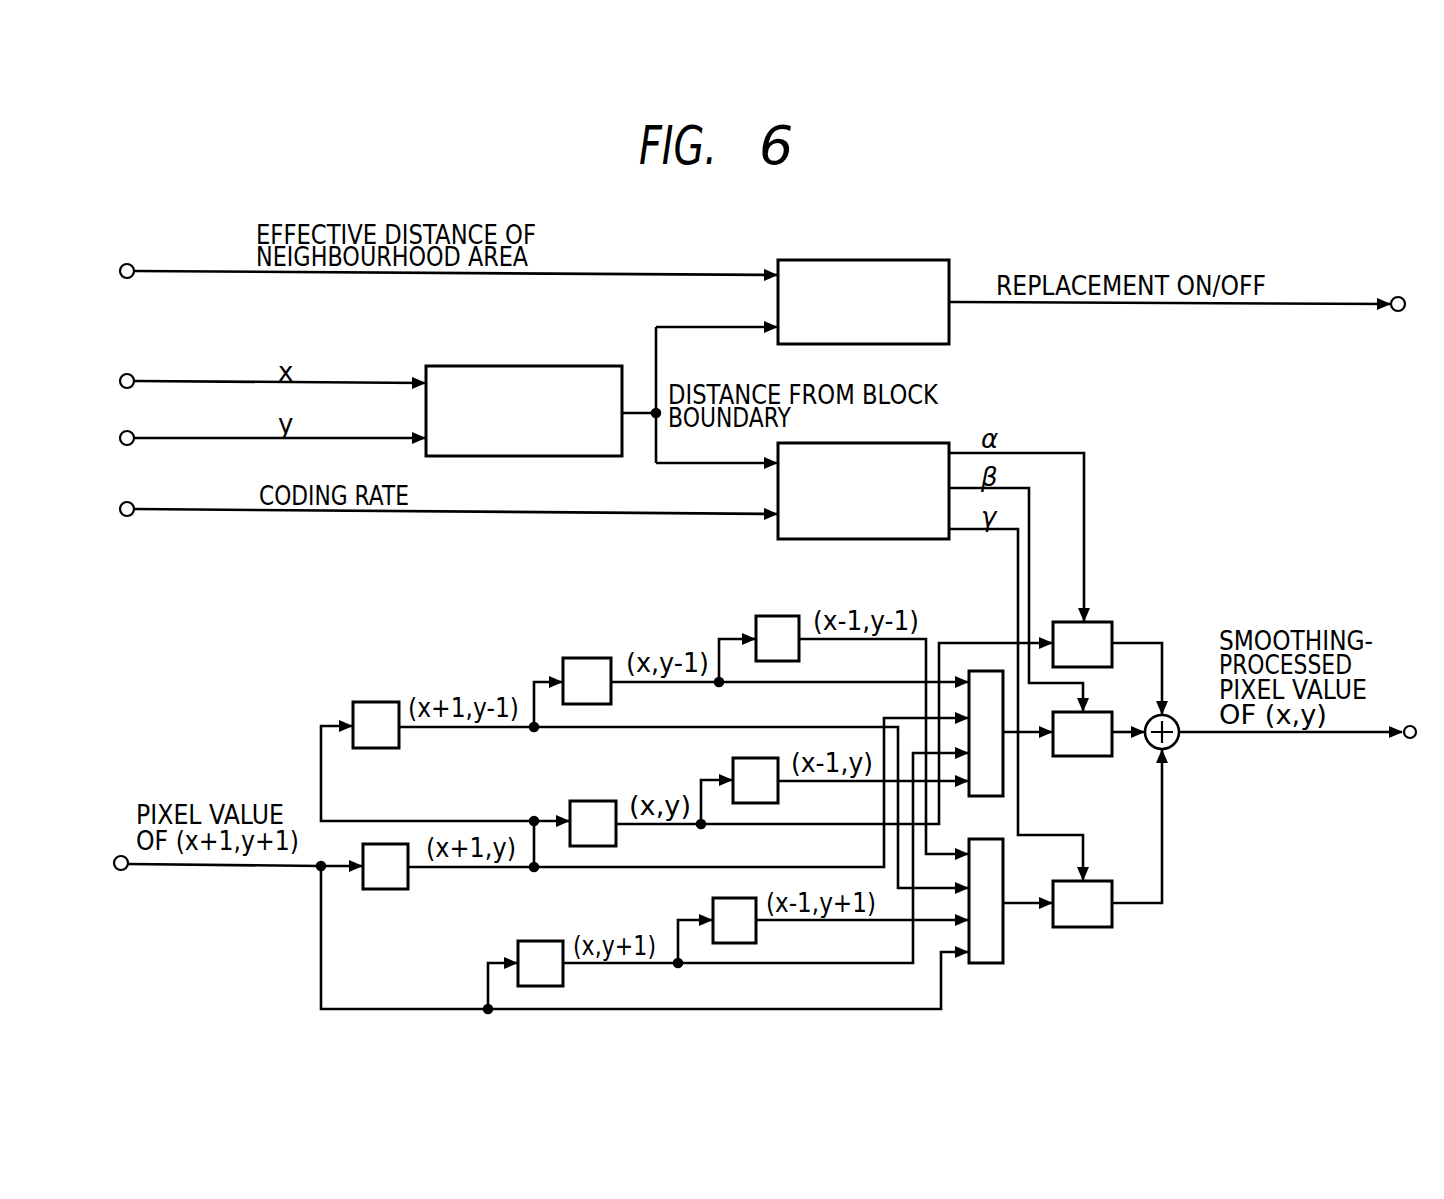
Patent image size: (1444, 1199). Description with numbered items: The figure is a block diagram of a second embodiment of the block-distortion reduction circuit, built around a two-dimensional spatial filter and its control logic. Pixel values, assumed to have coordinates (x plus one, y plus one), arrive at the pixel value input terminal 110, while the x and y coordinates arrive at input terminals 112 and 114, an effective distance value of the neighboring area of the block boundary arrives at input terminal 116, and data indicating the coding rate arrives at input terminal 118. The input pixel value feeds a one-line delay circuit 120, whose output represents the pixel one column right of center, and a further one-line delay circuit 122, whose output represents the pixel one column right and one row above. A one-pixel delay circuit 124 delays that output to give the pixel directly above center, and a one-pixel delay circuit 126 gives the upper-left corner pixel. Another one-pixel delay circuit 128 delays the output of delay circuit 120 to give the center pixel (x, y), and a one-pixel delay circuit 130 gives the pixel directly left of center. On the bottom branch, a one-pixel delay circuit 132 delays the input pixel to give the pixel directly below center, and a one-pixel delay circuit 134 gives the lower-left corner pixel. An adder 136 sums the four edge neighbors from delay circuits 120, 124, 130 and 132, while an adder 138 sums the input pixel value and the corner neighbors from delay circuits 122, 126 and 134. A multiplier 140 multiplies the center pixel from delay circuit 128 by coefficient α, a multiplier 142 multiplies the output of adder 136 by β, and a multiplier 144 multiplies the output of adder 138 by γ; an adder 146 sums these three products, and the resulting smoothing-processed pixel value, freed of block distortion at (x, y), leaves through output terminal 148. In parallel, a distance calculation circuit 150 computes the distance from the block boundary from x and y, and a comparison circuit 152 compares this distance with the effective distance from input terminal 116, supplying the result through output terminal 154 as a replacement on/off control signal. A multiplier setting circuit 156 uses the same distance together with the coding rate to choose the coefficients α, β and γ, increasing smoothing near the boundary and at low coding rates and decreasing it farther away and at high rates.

The pixel value input terminal 110 is at (124, 868).
The input terminal 112 is at (128, 373).
The input terminal 114 is at (128, 430).
The input terminal 116 is at (130, 264).
The input terminal 118 is at (128, 516).
The one-line delay circuit 120 is at (392, 888).
The one-line delay circuit 122 is at (363, 701).
The one-pixel delay circuit 124 is at (578, 657).
The one-pixel delay circuit 126 is at (765, 615).
The one-pixel delay circuit 128 is at (595, 800).
The one-pixel delay circuit 130 is at (725, 762).
The one-pixel delay circuit 132 is at (530, 940).
The one-pixel delay circuit 134 is at (755, 938).
The adder 136 is at (982, 795).
The adder 138 is at (992, 962).
The multiplier 140 is at (1100, 621).
The multiplier 142 is at (1100, 755).
The multiplier 144 is at (1100, 926).
The adder 146 is at (1172, 744).
The output terminal 148 is at (1409, 737).
The distance calculation circuit 150 is at (553, 365).
The comparison circuit 152 is at (885, 259).
The output terminal 154 is at (1397, 296).
The multiplier setting circuit 156 is at (885, 538).